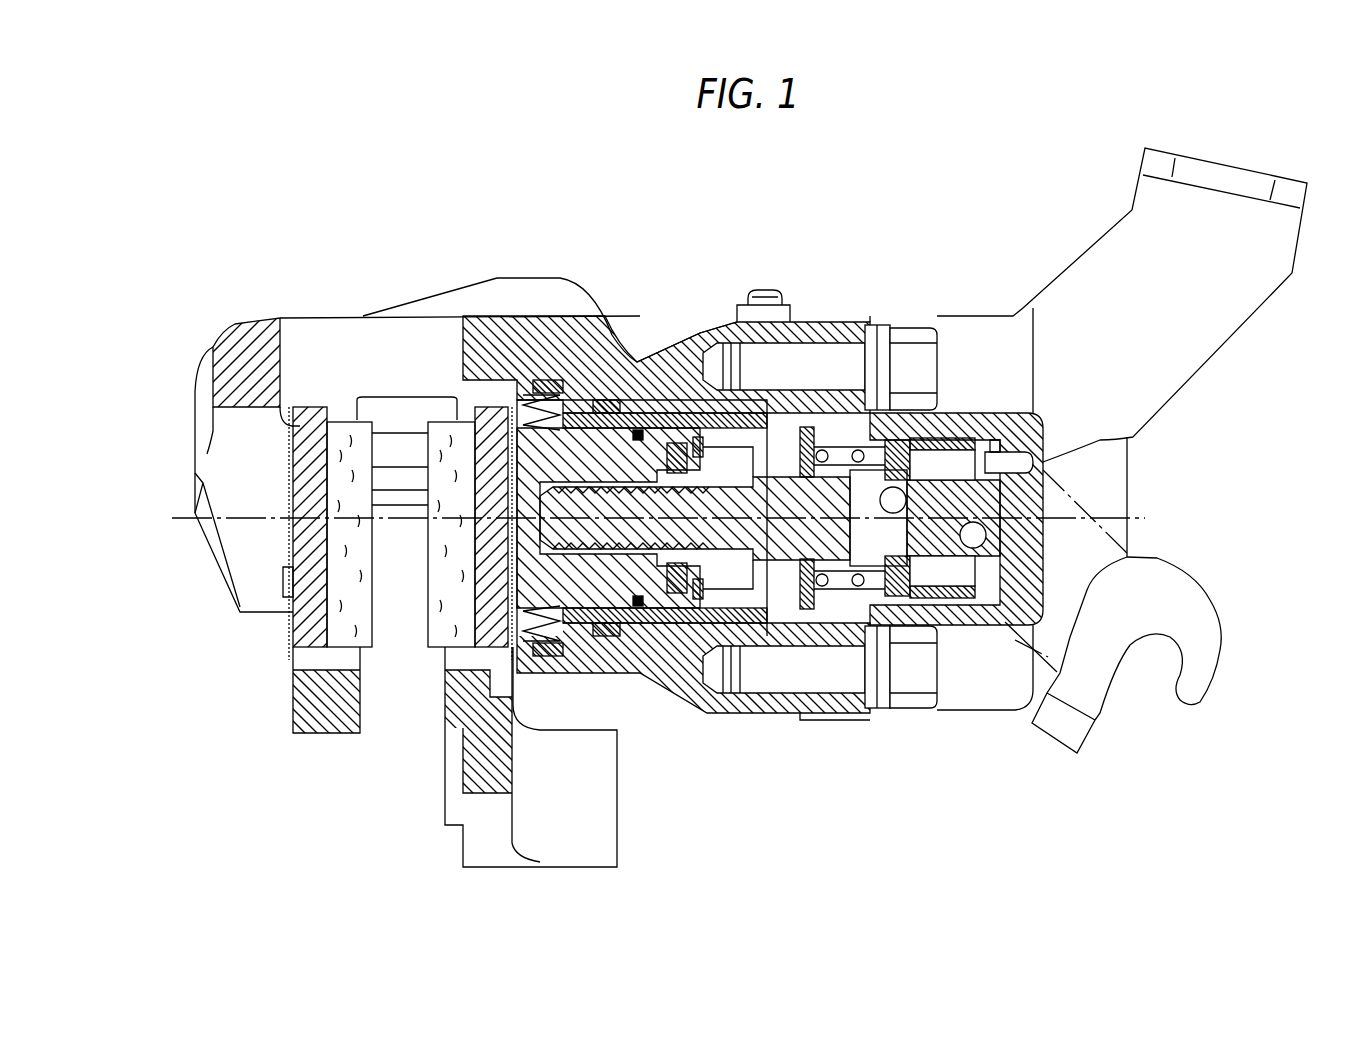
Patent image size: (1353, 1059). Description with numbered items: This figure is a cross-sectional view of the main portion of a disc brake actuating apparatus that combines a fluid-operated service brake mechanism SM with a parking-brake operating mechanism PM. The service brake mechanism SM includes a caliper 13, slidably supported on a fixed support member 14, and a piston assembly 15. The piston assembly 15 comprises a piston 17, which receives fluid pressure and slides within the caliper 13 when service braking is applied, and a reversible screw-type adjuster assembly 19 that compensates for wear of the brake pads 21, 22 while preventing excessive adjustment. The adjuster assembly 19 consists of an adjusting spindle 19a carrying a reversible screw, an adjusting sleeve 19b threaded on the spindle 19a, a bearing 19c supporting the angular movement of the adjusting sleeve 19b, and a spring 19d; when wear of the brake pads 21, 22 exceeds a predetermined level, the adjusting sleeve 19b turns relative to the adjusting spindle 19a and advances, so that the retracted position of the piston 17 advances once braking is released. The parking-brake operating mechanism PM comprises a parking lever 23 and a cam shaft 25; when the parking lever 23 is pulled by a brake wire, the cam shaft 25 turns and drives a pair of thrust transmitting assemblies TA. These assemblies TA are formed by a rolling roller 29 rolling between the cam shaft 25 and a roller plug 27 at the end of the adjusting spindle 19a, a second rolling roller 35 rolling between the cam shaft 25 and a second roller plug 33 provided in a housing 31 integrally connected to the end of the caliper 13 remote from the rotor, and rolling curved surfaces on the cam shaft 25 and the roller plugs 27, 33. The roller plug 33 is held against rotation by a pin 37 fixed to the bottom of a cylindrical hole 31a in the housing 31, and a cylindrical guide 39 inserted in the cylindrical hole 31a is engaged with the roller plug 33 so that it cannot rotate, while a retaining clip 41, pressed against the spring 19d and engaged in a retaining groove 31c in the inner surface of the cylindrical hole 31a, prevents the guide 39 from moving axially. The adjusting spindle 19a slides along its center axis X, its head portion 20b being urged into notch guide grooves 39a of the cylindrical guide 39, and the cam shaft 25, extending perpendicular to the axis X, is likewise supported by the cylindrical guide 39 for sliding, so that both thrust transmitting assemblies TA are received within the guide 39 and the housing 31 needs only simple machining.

The caliper 13 is at (268, 312).
The fixed support member 14 is at (457, 707).
The piston assembly 15 is at (632, 408).
The piston 17 is at (585, 600).
The adjuster assembly 19 is at (758, 420).
The adjusting spindle 19a is at (768, 640).
The adjusting sleeve 19b is at (673, 413).
The bearing 19c is at (655, 610).
The spring 19d is at (857, 440).
The head portion 20b is at (897, 440).
The brake pad 21 is at (357, 540).
The brake pad 22 is at (443, 603).
The parking lever 23 is at (1177, 592).
The cam shaft 25 is at (940, 560).
The roller plug 27 is at (877, 690).
The rolling roller 29 is at (896, 515).
The housing 31 is at (982, 413).
The cylindrical hole 31a is at (1030, 452).
The retaining groove 31c is at (826, 640).
The roller plug 33 is at (1020, 640).
The rolling roller 35 is at (975, 548).
The pin 37 is at (1133, 437).
The cylindrical guide 39 is at (938, 410).
The notch guide grooves 39a is at (826, 445).
The retaining clip 41 is at (806, 447).
The service brake mechanism SM is at (308, 209).
The parking-brake operating mechanism PM is at (857, 615).
The thrust transmitting assemblies TA is at (1043, 813).
The center axis X is at (660, 518).